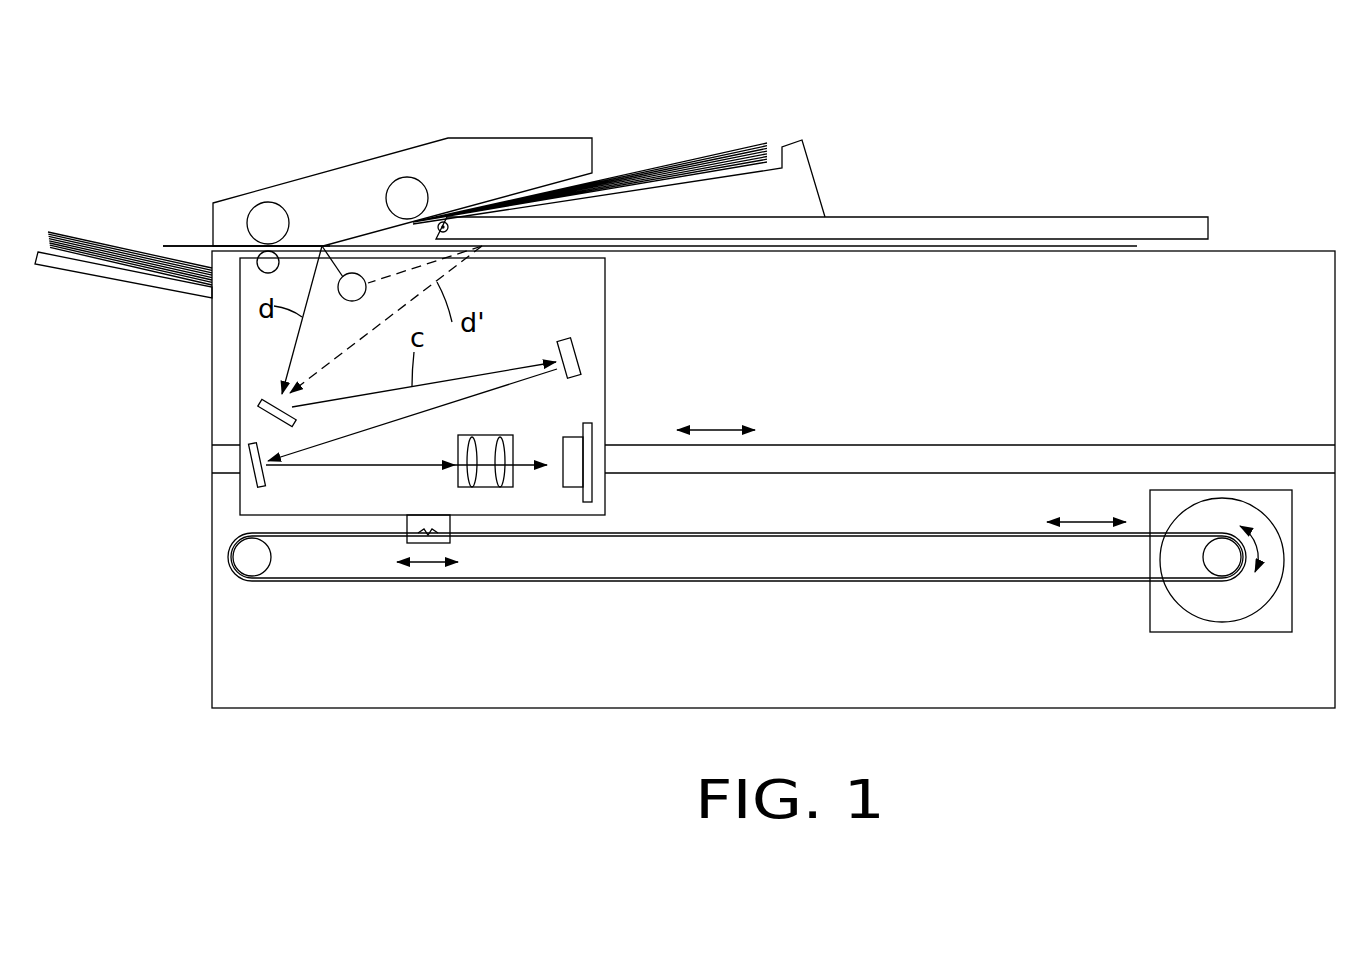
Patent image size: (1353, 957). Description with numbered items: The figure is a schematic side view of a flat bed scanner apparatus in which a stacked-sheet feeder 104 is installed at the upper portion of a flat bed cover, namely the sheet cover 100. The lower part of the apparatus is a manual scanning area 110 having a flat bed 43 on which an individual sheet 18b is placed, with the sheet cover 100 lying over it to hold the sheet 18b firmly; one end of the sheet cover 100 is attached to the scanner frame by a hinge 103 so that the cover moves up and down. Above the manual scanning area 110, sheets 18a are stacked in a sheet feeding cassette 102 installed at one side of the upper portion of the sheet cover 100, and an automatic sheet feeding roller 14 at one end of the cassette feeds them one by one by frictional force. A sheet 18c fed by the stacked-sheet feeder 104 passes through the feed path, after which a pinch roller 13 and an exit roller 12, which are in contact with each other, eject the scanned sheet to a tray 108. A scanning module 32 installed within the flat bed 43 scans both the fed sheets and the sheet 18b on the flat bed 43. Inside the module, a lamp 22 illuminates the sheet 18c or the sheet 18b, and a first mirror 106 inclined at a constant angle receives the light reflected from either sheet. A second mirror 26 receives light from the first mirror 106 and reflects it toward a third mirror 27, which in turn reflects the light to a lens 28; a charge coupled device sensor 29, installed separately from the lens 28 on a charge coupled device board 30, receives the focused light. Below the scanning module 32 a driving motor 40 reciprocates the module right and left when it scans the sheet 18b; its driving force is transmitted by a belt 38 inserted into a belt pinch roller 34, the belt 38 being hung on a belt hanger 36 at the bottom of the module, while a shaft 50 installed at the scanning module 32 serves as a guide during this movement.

The manual scanning area 110 is at (880, 104).
The flat bed 43 is at (1273, 251).
The sheet cover 100 is at (1163, 230).
The sheets 18a is at (708, 158).
The individual sheet 18b is at (922, 244).
The sheet 18c is at (190, 247).
The stacked-sheet feeder 104 is at (495, 152).
The exit roller 12 is at (268, 215).
The automatic sheet feeding roller 14 is at (405, 198).
The pinch roller 13 is at (261, 266).
The hinge 103 is at (449, 227).
The sheet feeding cassette 102 is at (815, 183).
The tray 108 is at (83, 268).
The scanning module 32 is at (608, 288).
The lamp 22 is at (350, 301).
The first mirror 106 is at (267, 410).
The second mirror 26 is at (563, 342).
The third mirror 27 is at (268, 478).
The lens 28 is at (483, 445).
The charge coupled device sensor 29 is at (577, 440).
The charge coupled device board 30 is at (590, 432).
The shaft 50 is at (1040, 458).
The belt 38 is at (567, 584).
The belt pinch roller 34 is at (255, 570).
The belt hanger 36 is at (445, 523).
The driving motor 40 is at (1228, 611).